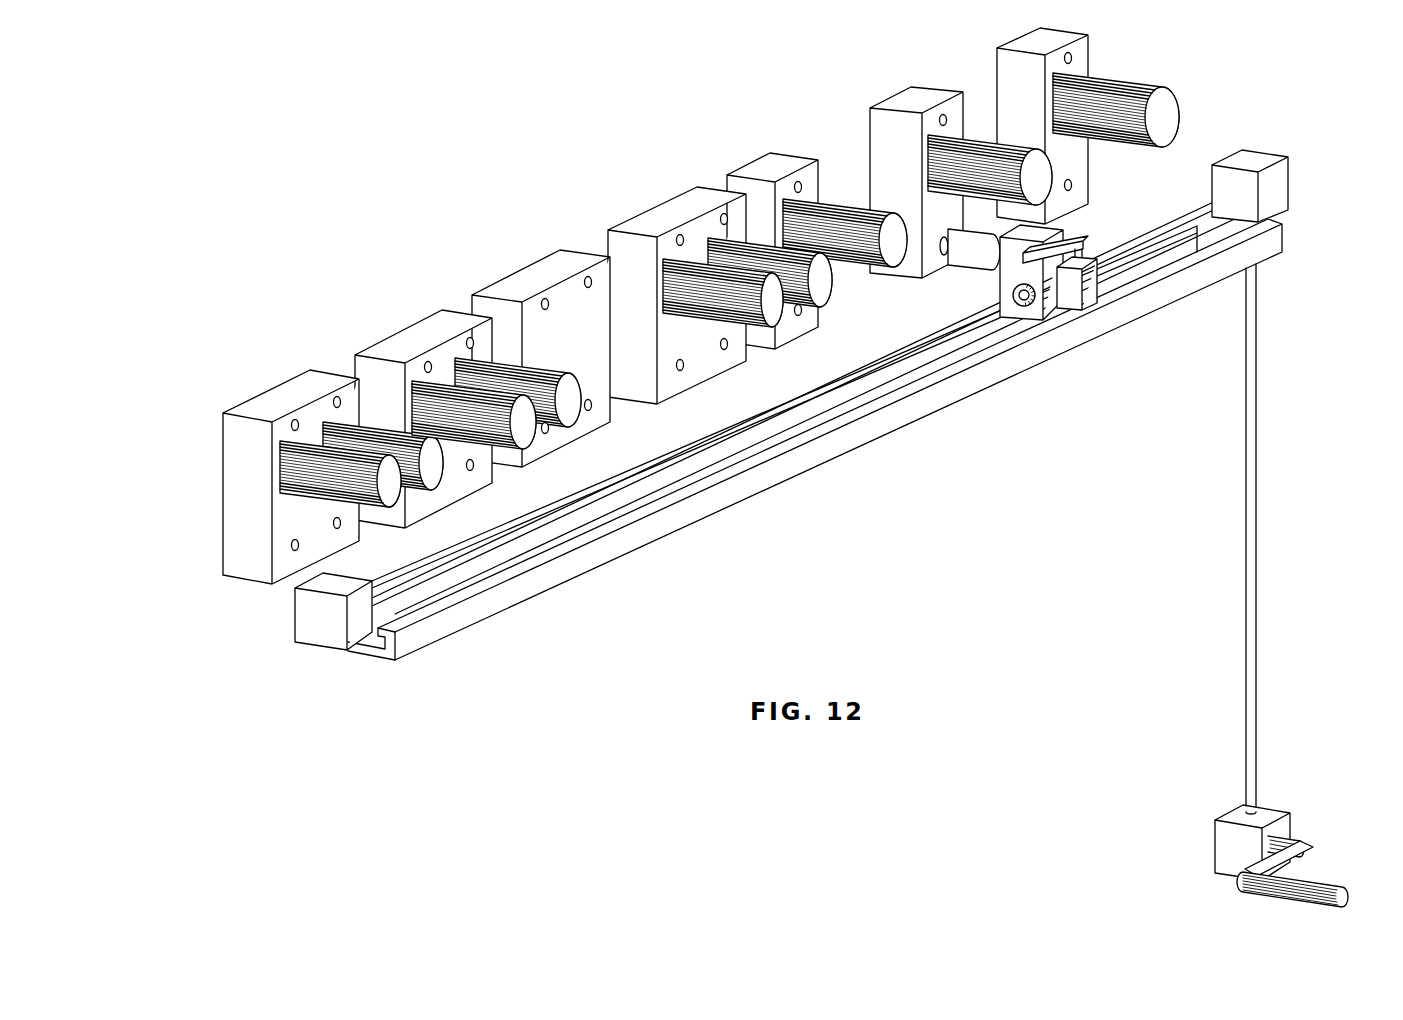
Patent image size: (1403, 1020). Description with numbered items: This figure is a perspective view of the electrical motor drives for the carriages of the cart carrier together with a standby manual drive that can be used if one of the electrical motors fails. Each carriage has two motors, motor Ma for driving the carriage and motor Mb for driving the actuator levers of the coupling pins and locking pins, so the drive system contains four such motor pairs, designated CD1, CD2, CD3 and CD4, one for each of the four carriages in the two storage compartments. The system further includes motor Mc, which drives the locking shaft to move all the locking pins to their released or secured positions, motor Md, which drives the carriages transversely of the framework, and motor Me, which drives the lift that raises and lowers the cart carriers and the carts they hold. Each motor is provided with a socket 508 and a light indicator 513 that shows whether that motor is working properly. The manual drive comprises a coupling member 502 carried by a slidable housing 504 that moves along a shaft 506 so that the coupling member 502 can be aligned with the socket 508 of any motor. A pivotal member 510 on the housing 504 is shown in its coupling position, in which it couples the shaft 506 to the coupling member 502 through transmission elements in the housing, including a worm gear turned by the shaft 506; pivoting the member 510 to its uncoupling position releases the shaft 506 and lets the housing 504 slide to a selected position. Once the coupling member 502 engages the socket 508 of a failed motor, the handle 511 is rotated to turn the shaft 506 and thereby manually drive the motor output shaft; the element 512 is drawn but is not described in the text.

The coupling member 502 is at (973, 250).
The slidable housing 504 is at (1033, 230).
The shaft 506 is at (742, 427).
The socket 508 is at (295, 553).
The pivotal member 510 is at (1028, 300).
The handle 511 is at (1315, 885).
The shaft 512 is at (1245, 540).
The light indicator 513 is at (288, 426).
The pair of motors CD1 is at (254, 398).
The pair of motors CD2 is at (396, 338).
The pair of motors CD3 is at (533, 264).
The pair of motors CD4 is at (639, 214).
The motor Ma is at (315, 481).
The motor Mb is at (430, 466).
The motor Mc is at (866, 263).
The motor Md is at (570, 401).
The motor Me is at (1168, 116).